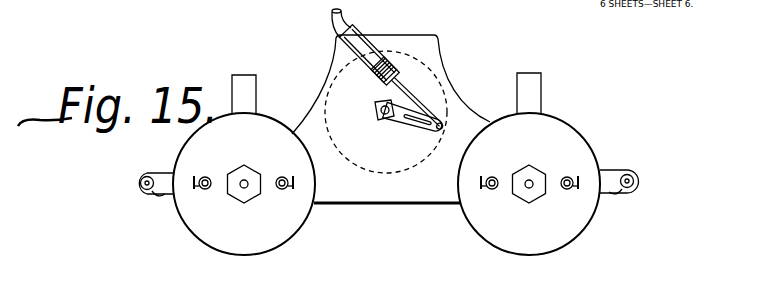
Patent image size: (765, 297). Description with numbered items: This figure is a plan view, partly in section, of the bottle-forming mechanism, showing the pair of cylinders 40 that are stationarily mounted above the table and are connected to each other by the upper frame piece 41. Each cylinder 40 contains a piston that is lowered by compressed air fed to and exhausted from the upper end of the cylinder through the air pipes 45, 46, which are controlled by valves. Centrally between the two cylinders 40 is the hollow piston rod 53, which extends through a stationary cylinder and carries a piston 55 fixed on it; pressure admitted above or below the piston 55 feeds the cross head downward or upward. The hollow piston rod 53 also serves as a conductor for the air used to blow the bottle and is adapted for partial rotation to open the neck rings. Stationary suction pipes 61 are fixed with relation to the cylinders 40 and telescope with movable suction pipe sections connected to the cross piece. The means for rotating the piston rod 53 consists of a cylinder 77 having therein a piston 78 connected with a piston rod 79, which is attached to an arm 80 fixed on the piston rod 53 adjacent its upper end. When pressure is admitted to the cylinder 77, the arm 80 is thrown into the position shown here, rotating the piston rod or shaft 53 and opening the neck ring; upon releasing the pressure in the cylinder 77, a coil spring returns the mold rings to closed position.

The cylinder 40 is at (248, 230).
The upper frame piece 41 is at (315, 123).
The air pipe 45 is at (285, 192).
The air pipe 46 is at (202, 189).
The hollow piston rod 53 is at (381, 117).
The piston 55 is at (455, 288).
The suction pipe 61 is at (143, 176).
The cylinder 77 is at (333, 38).
The piston 78 is at (394, 70).
The piston rod 79 is at (412, 103).
The arm 80 is at (424, 126).